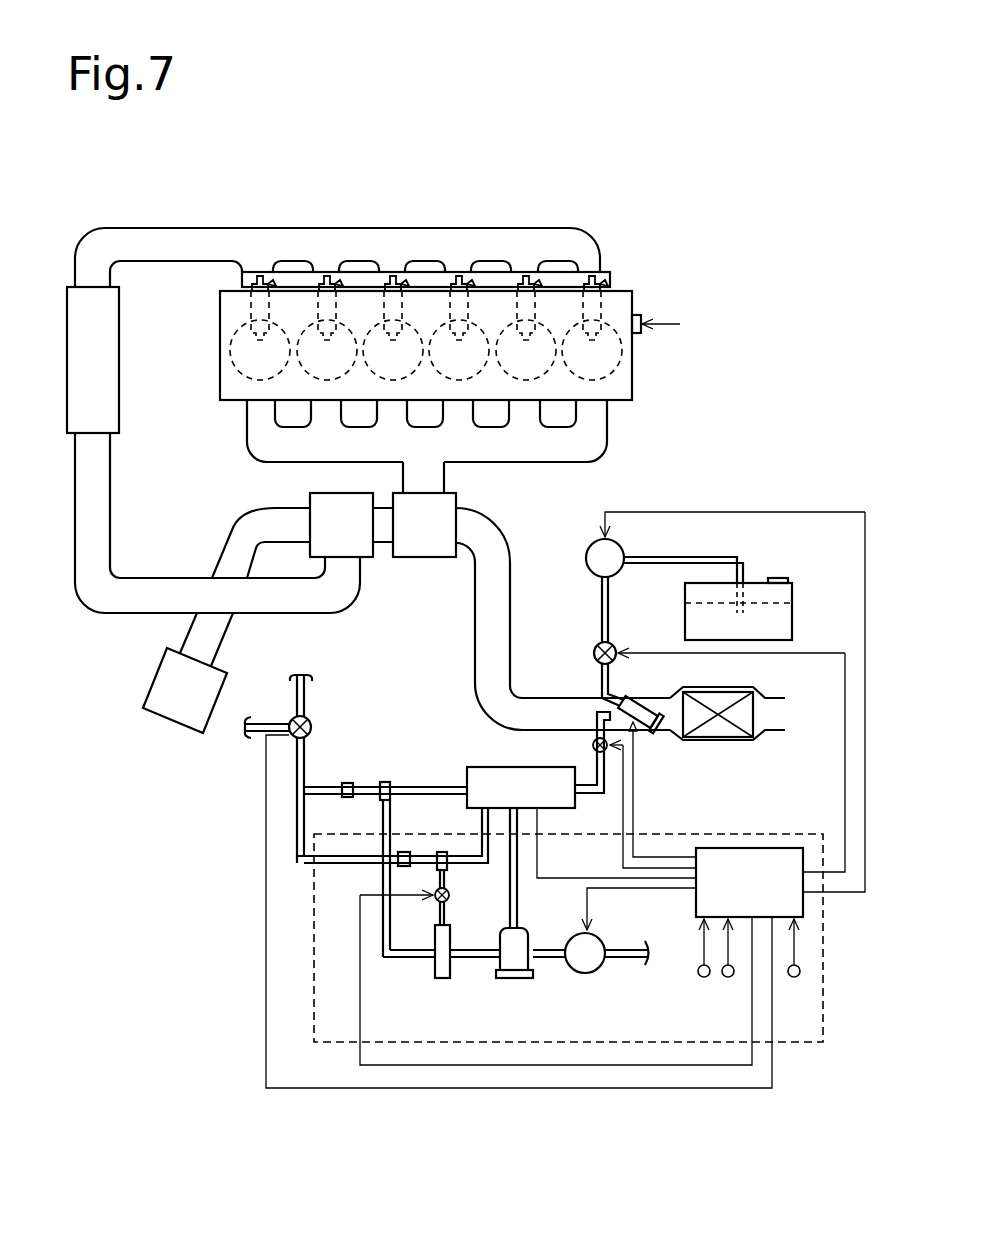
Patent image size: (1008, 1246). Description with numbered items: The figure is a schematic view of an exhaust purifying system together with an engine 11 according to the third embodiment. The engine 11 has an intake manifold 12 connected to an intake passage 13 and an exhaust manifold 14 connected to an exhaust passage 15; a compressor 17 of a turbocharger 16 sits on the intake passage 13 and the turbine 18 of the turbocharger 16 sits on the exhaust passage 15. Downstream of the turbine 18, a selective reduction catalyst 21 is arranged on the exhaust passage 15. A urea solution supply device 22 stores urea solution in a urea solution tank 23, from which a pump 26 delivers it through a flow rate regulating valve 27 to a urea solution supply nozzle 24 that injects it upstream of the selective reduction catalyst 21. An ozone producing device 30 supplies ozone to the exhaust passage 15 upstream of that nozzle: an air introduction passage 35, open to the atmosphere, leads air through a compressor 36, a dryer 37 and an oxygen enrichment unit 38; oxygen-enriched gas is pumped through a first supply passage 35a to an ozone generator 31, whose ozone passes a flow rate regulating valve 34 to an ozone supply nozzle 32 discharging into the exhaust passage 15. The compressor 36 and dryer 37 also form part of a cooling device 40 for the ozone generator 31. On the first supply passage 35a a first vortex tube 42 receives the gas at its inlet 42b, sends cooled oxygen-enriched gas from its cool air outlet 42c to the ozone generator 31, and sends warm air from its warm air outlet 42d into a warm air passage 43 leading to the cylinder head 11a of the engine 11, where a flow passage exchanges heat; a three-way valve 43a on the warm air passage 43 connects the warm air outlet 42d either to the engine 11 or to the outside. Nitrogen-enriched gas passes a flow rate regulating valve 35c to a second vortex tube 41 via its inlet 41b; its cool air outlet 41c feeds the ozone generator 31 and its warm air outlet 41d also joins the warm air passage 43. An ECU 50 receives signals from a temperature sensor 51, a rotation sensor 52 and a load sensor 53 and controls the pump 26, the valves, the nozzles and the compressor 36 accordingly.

The engine 11 is at (271, 211).
The cylinder head 11a is at (632, 383).
The intake manifold 12 is at (548, 228).
The intake passage 13 is at (74, 540).
The exhaust manifold 14 is at (608, 428).
The exhaust passage 15 is at (438, 478).
The turbocharger 16 is at (383, 566).
The compressor 17 is at (310, 494).
The turbine 18 is at (458, 499).
The selective reduction catalyst 21 is at (714, 738).
The urea solution supply device 22 is at (765, 570).
The urea solution tank 23 is at (793, 595).
The urea solution supply nozzle 24 is at (641, 704).
The pump 26 is at (586, 556).
The flow rate regulating valve 27 is at (594, 652).
The ozone producing device 30 is at (242, 789).
The ozone generator 31 is at (512, 767).
The ozone supply nozzle 32 is at (597, 714).
The flow rate regulating valve 34 is at (593, 746).
The air introduction passage 35 is at (633, 958).
The first supply passage 35a is at (402, 958).
The flow rate regulating valve 35c is at (434, 897).
The compressor 36 is at (586, 975).
The dryer 37 is at (513, 979).
The oxygen enrichment unit 38 is at (445, 979).
The cooling device 40 is at (332, 1043).
The second vortex tube 41 is at (416, 853).
The inlet 41b is at (449, 896).
The cool air outlet 41c is at (450, 862).
The warm air outlet 41d is at (398, 862).
The first vortex tube 42 is at (383, 782).
The inlet 42b is at (380, 813).
The cool air outlet 42c is at (392, 782).
The warm air outlet 42d is at (347, 783).
The warm air passage 43 is at (305, 865).
The three-way valve 43a is at (311, 722).
The ECU 50 is at (765, 848).
The temperature sensor 51 is at (700, 977).
The rotation sensor 52 is at (728, 977).
The load sensor 53 is at (794, 977).